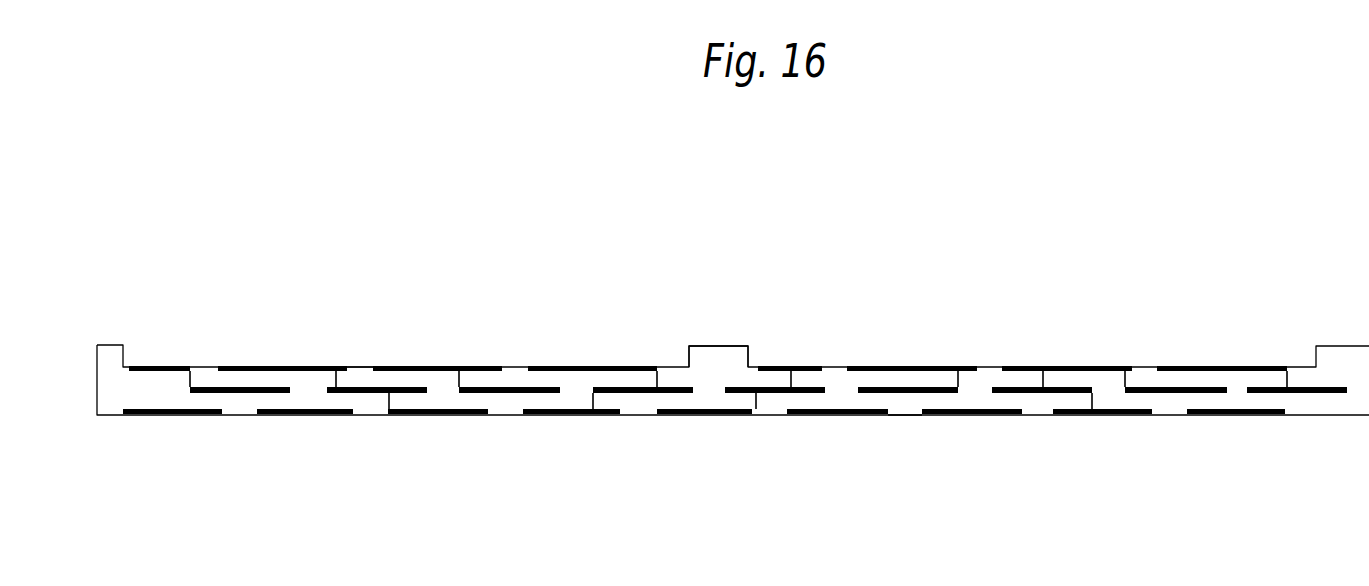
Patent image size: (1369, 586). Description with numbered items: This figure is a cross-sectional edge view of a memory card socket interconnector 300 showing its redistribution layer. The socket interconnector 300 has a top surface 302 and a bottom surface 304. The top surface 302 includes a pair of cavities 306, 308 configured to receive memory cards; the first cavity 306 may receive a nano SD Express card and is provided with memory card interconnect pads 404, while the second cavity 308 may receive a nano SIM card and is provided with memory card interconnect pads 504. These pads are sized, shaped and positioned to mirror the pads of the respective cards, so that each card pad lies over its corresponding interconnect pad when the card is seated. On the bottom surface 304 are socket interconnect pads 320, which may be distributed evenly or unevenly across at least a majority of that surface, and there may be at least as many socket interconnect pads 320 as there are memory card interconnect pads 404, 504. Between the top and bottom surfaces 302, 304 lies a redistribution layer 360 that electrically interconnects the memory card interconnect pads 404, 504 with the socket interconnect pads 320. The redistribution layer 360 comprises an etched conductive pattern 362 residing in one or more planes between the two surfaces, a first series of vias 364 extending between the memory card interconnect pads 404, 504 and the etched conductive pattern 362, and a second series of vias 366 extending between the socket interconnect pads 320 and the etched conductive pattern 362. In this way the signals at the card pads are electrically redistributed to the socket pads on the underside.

The memory card socket interconnector 300 is at (1190, 272).
The top surface 302 is at (717, 346).
The bottom surface 304 is at (897, 414).
The cavity 306 is at (515, 367).
The cavity 308 is at (1142, 367).
The socket interconnect pads 320 is at (1218, 414).
The redistribution layer 360 is at (755, 393).
The etched conductive pattern 362 is at (493, 393).
The first series of vias 364 is at (357, 367).
The second series of vias 366 is at (388, 396).
The memory card interconnect pads 404 is at (273, 366).
The memory card interconnect pads 504 is at (907, 367).